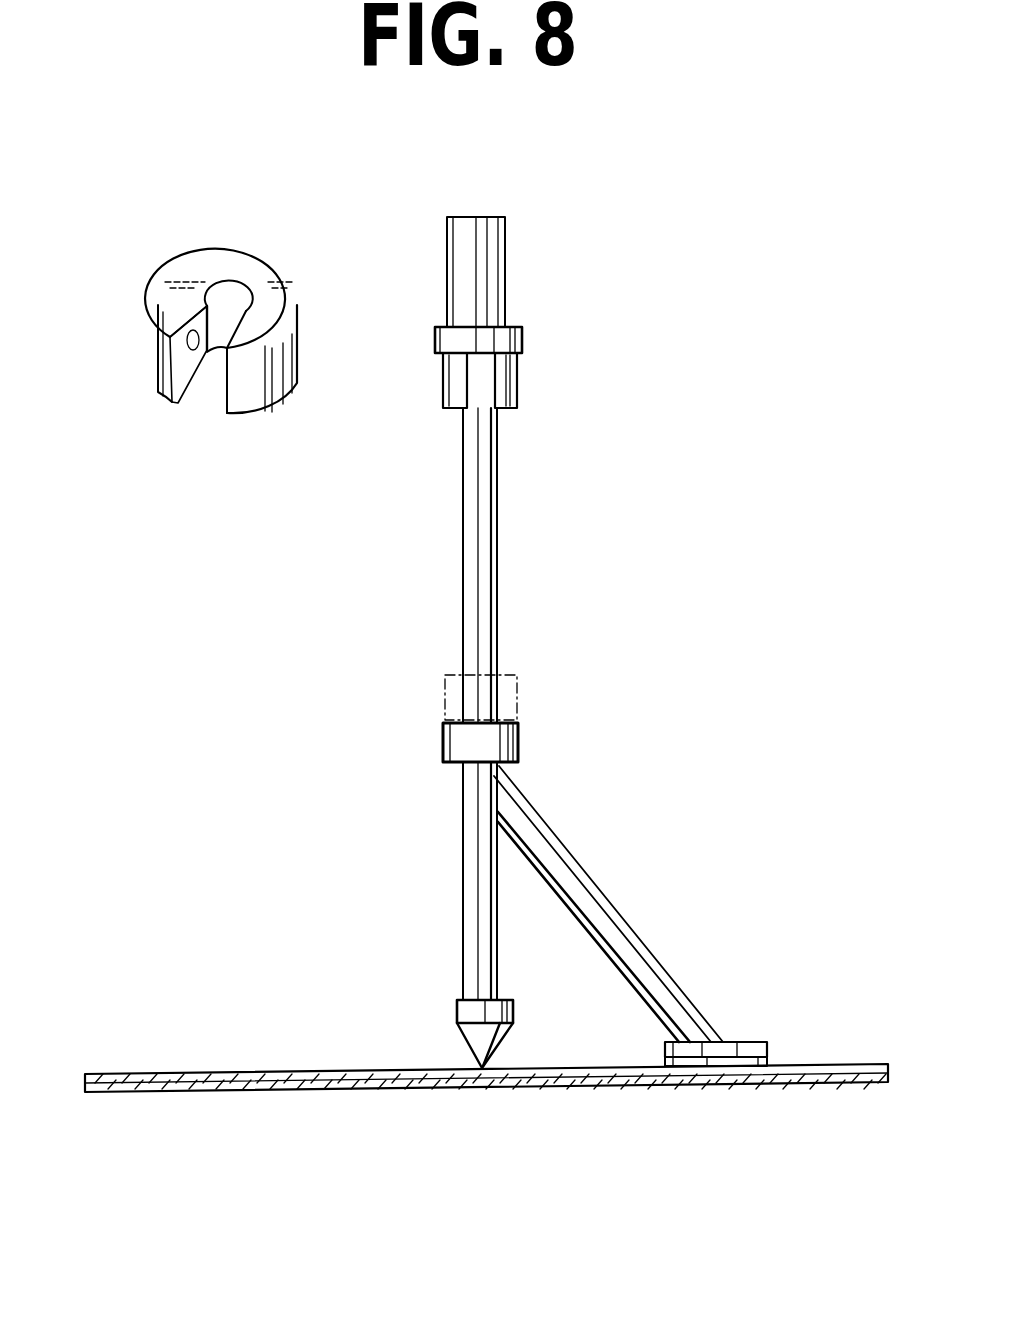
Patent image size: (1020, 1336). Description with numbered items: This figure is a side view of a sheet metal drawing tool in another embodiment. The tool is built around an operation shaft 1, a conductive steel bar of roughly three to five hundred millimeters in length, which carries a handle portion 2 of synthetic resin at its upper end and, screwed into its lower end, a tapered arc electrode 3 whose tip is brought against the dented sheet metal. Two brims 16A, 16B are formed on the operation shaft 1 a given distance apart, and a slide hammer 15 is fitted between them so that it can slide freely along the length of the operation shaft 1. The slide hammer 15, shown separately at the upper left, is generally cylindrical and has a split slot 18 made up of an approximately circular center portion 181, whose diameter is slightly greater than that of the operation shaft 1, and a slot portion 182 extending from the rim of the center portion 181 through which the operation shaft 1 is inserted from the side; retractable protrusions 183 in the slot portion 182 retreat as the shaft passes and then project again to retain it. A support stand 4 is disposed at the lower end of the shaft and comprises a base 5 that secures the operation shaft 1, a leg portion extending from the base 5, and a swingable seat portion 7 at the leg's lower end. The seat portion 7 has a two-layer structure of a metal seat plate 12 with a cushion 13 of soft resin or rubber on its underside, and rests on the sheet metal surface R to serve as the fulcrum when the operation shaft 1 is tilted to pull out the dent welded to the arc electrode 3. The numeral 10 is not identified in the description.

The operation shaft 1 is at (500, 540).
The handle portion 2 is at (520, 292).
The arc electrode 3 is at (448, 1050).
The support stand 4 is at (602, 888).
The base 5 is at (527, 393).
The seat portion 7 is at (792, 1018).
The board 10 is at (333, 1090).
The seat plate 12 is at (753, 1040).
The cushion 13 is at (755, 1062).
The slide hammer 15 is at (163, 265).
The brim 16A is at (537, 335).
The brim 16B is at (522, 737).
The split slot 18 is at (172, 430).
The center portion 181 is at (236, 293).
The slot portion 182 is at (213, 413).
The retractable protrusion 183 is at (187, 353).
The sheet metal surface R is at (560, 1083).